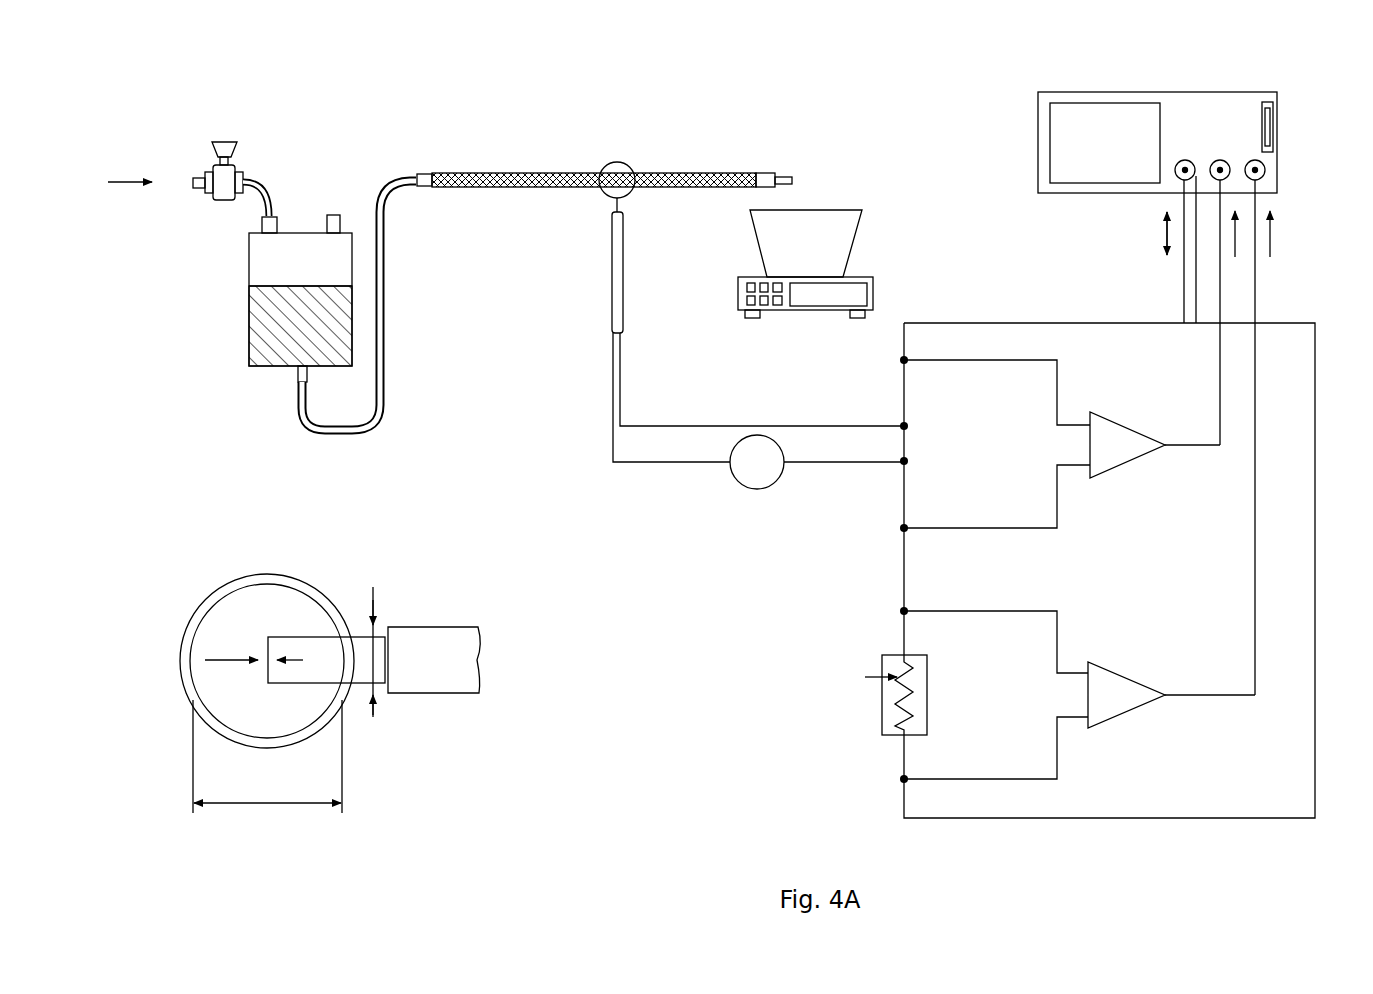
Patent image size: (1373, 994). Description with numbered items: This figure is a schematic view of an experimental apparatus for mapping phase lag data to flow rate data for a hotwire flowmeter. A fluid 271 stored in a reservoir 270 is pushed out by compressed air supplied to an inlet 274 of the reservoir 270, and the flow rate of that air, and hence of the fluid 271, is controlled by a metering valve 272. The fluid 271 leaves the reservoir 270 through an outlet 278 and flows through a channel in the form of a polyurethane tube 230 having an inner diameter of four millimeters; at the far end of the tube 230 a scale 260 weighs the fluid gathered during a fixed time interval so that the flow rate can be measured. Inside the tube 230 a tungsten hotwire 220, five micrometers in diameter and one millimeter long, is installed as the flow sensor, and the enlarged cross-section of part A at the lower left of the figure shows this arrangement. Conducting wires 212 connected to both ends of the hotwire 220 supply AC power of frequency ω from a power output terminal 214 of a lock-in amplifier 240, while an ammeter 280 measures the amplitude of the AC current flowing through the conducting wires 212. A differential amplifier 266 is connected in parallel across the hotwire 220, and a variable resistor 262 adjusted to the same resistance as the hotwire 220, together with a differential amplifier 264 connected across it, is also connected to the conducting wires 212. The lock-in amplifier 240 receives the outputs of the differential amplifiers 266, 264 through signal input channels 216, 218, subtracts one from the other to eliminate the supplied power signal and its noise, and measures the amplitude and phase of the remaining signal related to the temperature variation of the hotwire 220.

The metering valve 272 is at (217, 140).
The inlet 274 is at (282, 210).
The fluid 271 is at (296, 297).
The reservoir 270 is at (248, 310).
The outlet 278 is at (297, 376).
The polyurethane tube 230 is at (683, 173).
The tungsten hotwire 220 is at (268, 672).
The conducting wires 212 is at (808, 424).
The ammeter 280 is at (744, 490).
The scale 260 is at (848, 210).
The lock-in amplifier 240 is at (1087, 92).
The power output terminal 214 is at (1182, 157).
The signal input channel 216 is at (1223, 158).
The signal input channel 218 is at (1265, 174).
The differential amplifier 266 is at (1135, 428).
The differential amplifier 264 is at (1135, 680).
The variable resistor 262 is at (880, 716).